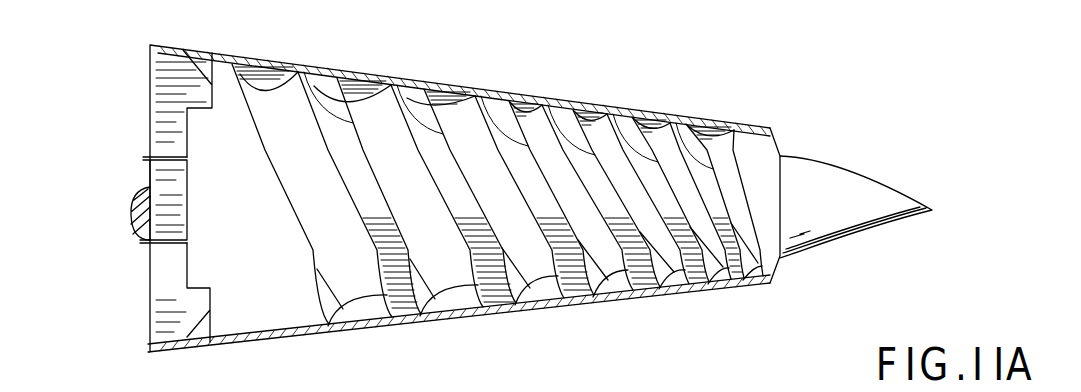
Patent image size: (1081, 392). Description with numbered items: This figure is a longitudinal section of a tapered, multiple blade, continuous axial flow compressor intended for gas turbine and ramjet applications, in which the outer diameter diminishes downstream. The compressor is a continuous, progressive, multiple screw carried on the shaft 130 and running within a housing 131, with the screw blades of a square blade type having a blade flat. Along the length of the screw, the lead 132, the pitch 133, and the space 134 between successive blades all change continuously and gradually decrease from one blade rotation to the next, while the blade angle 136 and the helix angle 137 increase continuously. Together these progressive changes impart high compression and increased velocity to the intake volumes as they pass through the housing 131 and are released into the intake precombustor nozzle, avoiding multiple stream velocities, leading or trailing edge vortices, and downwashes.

The shaft 130 is at (152, 158).
The housing 131 is at (565, 98).
The lead 132 is at (460, 100).
The pitch 133 is at (345, 82).
The space 134 is at (247, 83).
The blade angle 136 is at (437, 303).
The helix angle 137 is at (383, 187).